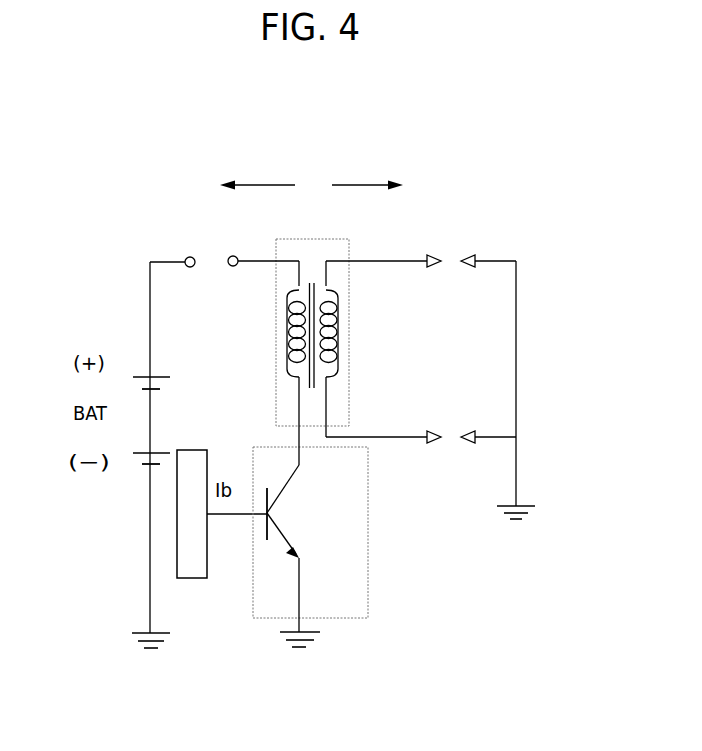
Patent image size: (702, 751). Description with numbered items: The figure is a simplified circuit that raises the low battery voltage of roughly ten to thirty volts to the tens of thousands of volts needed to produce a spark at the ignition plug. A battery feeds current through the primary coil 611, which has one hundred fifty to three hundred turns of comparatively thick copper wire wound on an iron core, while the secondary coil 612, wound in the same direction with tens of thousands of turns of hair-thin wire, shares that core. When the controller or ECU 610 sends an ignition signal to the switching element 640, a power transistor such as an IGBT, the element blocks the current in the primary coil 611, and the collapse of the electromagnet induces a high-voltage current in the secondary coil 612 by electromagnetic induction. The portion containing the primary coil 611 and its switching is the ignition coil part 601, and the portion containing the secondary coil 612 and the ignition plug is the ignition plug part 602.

The ignition coil part 601 is at (257, 200).
The ignition plug part 602 is at (367, 200).
The ECU 610 is at (177, 514).
The primary coil 611 is at (288, 312).
The secondary coil 612 is at (338, 313).
The switching element 640 is at (368, 597).